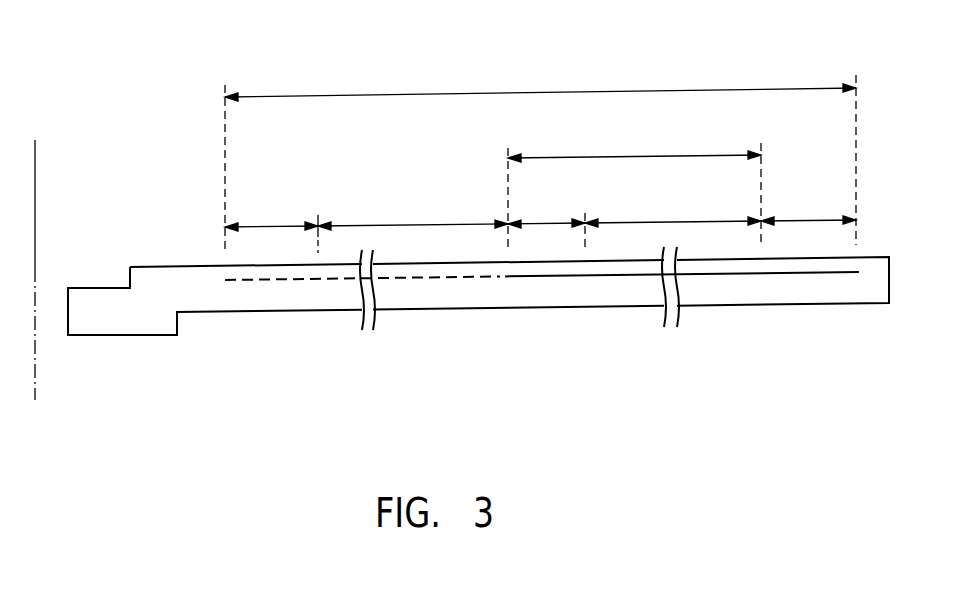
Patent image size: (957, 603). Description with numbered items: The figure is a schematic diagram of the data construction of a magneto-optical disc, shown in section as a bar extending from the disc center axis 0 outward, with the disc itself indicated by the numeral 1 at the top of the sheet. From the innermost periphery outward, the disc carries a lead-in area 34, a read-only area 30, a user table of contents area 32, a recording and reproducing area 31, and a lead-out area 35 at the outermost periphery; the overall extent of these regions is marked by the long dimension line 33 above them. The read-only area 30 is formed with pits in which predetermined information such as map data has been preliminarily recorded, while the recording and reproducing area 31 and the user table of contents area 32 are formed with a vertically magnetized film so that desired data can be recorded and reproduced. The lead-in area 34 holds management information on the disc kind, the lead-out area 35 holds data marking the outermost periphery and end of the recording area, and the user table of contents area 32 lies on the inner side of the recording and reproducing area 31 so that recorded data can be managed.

The disc center axis 0 is at (36, 157).
The optical disc 1 is at (158, 25).
The read-only area 30 is at (447, 227).
The recording and reproducing area 31 is at (637, 225).
The user table of contents area 32 is at (557, 222).
The recording area 33 is at (447, 95).
The lead-in area 34 is at (268, 228).
The lead-out area 35 is at (809, 221).